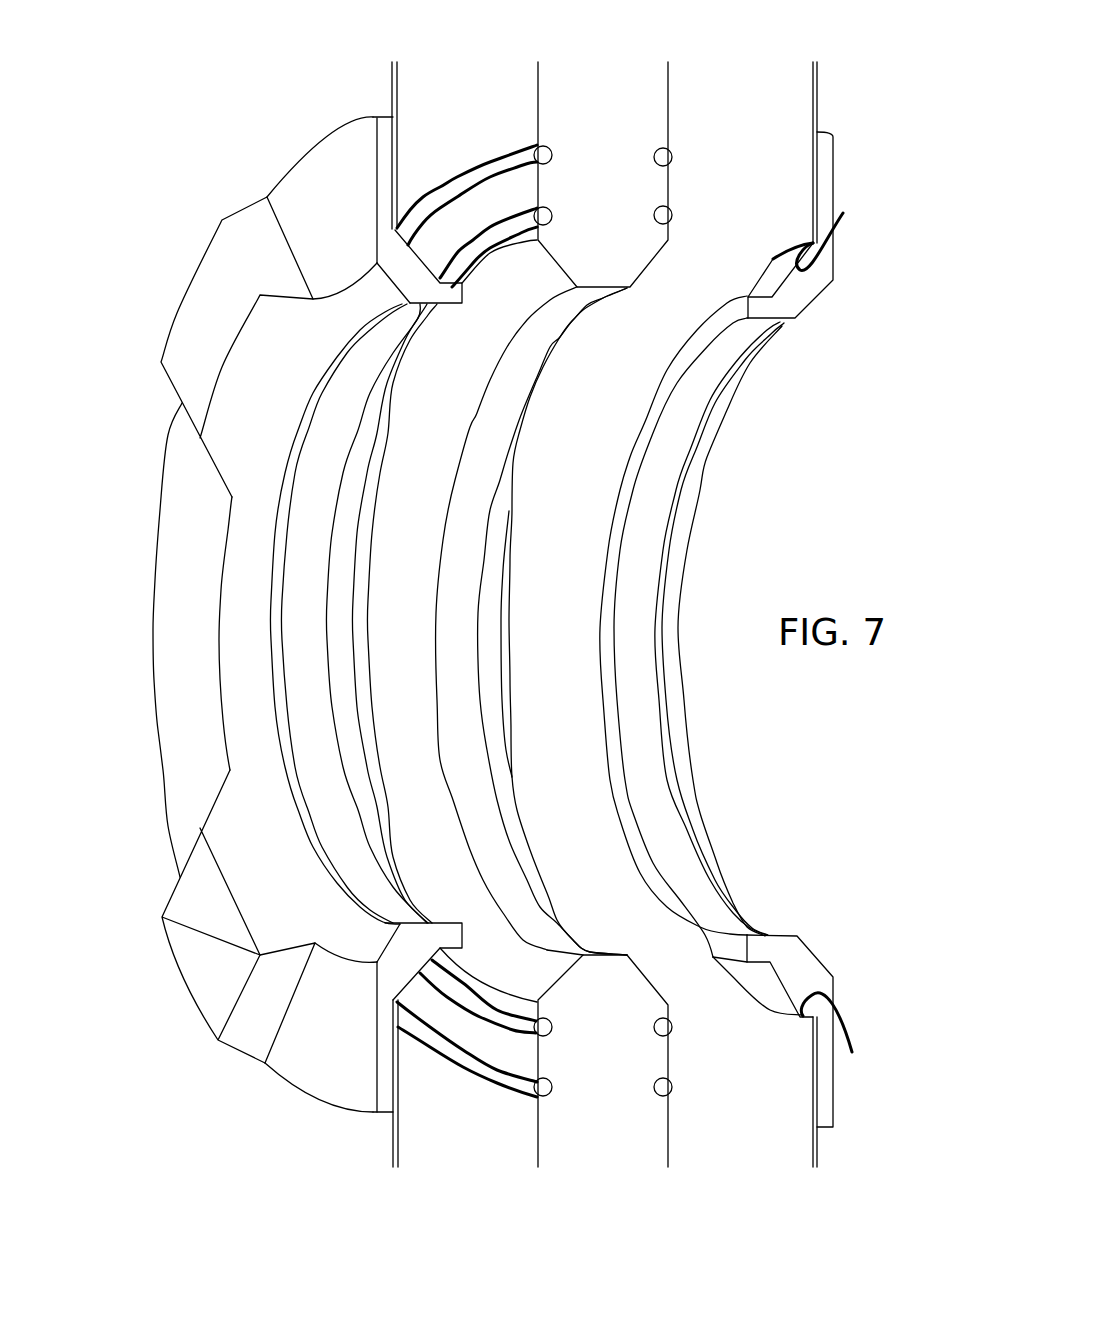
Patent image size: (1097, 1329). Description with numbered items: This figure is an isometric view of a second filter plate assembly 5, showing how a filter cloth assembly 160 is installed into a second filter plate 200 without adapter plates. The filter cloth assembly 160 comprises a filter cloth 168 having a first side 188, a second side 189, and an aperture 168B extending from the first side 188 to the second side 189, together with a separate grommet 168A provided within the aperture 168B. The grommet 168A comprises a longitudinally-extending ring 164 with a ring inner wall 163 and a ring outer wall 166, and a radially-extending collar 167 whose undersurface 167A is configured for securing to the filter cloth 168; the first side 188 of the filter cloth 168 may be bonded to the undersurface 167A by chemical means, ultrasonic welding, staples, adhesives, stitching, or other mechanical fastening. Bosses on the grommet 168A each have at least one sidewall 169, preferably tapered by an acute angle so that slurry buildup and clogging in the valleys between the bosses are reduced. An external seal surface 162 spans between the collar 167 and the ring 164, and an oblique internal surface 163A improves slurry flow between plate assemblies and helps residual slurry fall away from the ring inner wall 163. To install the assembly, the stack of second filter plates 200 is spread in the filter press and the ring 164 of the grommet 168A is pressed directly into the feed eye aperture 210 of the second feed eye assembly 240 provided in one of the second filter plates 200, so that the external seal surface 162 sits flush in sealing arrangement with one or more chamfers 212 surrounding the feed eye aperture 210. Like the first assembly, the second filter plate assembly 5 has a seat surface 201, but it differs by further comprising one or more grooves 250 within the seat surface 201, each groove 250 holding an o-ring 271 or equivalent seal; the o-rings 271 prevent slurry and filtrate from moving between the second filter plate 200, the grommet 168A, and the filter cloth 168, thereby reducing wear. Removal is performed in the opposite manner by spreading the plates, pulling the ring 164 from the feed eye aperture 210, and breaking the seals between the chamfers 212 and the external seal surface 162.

The second filter plate assembly 5 is at (185, 78).
The filter cloth assembly 160 is at (768, 866).
The external seal surface 162 is at (775, 992).
The ring inner wall 163 is at (335, 418).
The oblique internal surface 163A is at (250, 705).
The longitudinally-extending ring 164 is at (440, 296).
The ring outer wall 166 is at (756, 297).
The radially-extending collar 167 is at (383, 188).
The undersurface 167A is at (392, 163).
The filter cloth 168 is at (393, 100).
The grommet 168A is at (170, 425).
The aperture 168B is at (851, 629).
The sidewall 169 is at (257, 1002).
The first side 188 is at (393, 1135).
The second side 189 is at (398, 1155).
The second filter plate 200 is at (631, 140).
The seat surface 201 is at (507, 112).
The feed eye aperture 210 is at (458, 762).
The chamfers 212 is at (487, 650).
The second feed eye assembly 240 is at (783, 490).
The groove 250 is at (657, 1086).
The o-ring 271 is at (510, 1025).